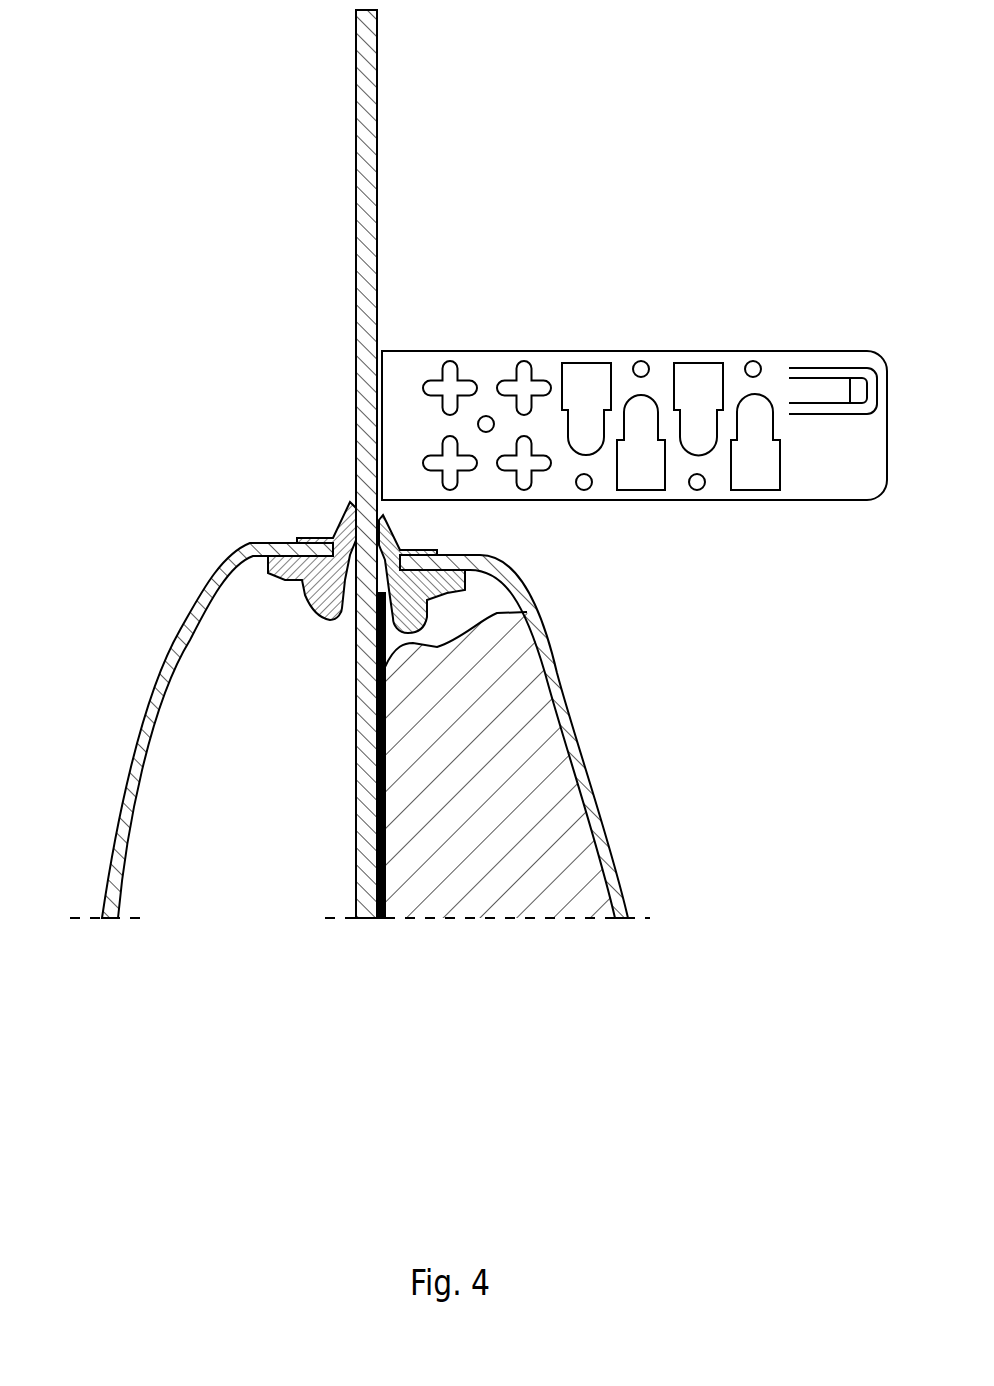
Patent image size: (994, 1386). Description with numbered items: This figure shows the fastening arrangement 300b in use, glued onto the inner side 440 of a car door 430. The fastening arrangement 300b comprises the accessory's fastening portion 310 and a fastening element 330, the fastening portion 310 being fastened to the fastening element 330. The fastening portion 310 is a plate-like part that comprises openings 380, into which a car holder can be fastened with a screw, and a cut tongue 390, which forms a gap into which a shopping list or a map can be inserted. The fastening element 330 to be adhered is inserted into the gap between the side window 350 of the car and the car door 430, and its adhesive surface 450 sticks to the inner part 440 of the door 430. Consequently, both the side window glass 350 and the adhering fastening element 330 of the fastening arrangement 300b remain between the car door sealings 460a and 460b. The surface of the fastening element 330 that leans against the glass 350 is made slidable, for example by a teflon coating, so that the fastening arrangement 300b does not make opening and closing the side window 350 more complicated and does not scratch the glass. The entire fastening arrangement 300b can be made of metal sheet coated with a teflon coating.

The fastening arrangement 300b is at (634, 395).
The fastening portion 310 is at (845, 473).
The fastening element 330 is at (356, 750).
The side window 350 is at (355, 203).
The openings 380 is at (755, 473).
The cut tongue 390 is at (832, 393).
The car door 430 is at (173, 624).
The inner side of car door 440 is at (560, 728).
The adhesive surface 450 is at (356, 830).
The car door sealing 460a is at (340, 517).
The car door sealing 460b is at (397, 532).